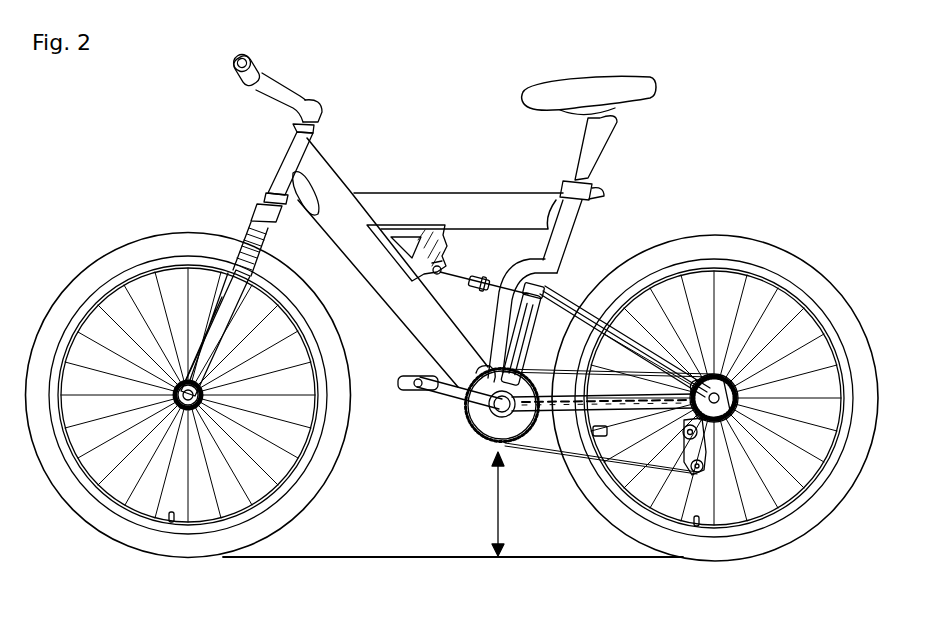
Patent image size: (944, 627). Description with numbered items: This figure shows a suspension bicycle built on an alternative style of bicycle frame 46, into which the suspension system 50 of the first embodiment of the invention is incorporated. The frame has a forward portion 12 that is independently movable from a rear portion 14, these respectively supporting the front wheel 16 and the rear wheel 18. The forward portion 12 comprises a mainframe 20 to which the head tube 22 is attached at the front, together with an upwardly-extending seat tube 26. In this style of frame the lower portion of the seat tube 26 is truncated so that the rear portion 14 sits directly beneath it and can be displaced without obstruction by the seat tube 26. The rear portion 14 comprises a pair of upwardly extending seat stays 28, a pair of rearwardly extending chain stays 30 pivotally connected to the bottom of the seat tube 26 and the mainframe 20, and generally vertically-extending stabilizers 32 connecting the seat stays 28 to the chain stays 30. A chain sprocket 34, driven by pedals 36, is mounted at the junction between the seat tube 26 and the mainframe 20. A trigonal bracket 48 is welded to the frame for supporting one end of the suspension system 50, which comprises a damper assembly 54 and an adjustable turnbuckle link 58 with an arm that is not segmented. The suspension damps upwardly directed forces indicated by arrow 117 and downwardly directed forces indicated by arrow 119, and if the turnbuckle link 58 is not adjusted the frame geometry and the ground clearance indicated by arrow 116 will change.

The forward portion 12 is at (462, 241).
The rear portion 14 is at (615, 355).
The front wheel 16 is at (134, 250).
The rear wheel 18 is at (752, 246).
The mainframe 20 is at (356, 266).
The head tube 22 is at (286, 152).
The seat tube 26 is at (596, 190).
The seat stays 28 is at (574, 296).
The chain stays 30 is at (558, 418).
The stabilizers 32 is at (523, 346).
The chain sprocket 34 is at (540, 408).
The pedals 36 is at (416, 376).
The bicycle frame 46 is at (410, 62).
The bracket 48 is at (436, 236).
The suspension system 50 is at (460, 280).
The damper assembly 54 is at (434, 278).
The turnbuckle link 58 is at (468, 297).
The ground clearance 116 is at (504, 504).
The upwardly directed forces 117 is at (604, 200).
The downwardly directed forces 119 is at (632, 596).